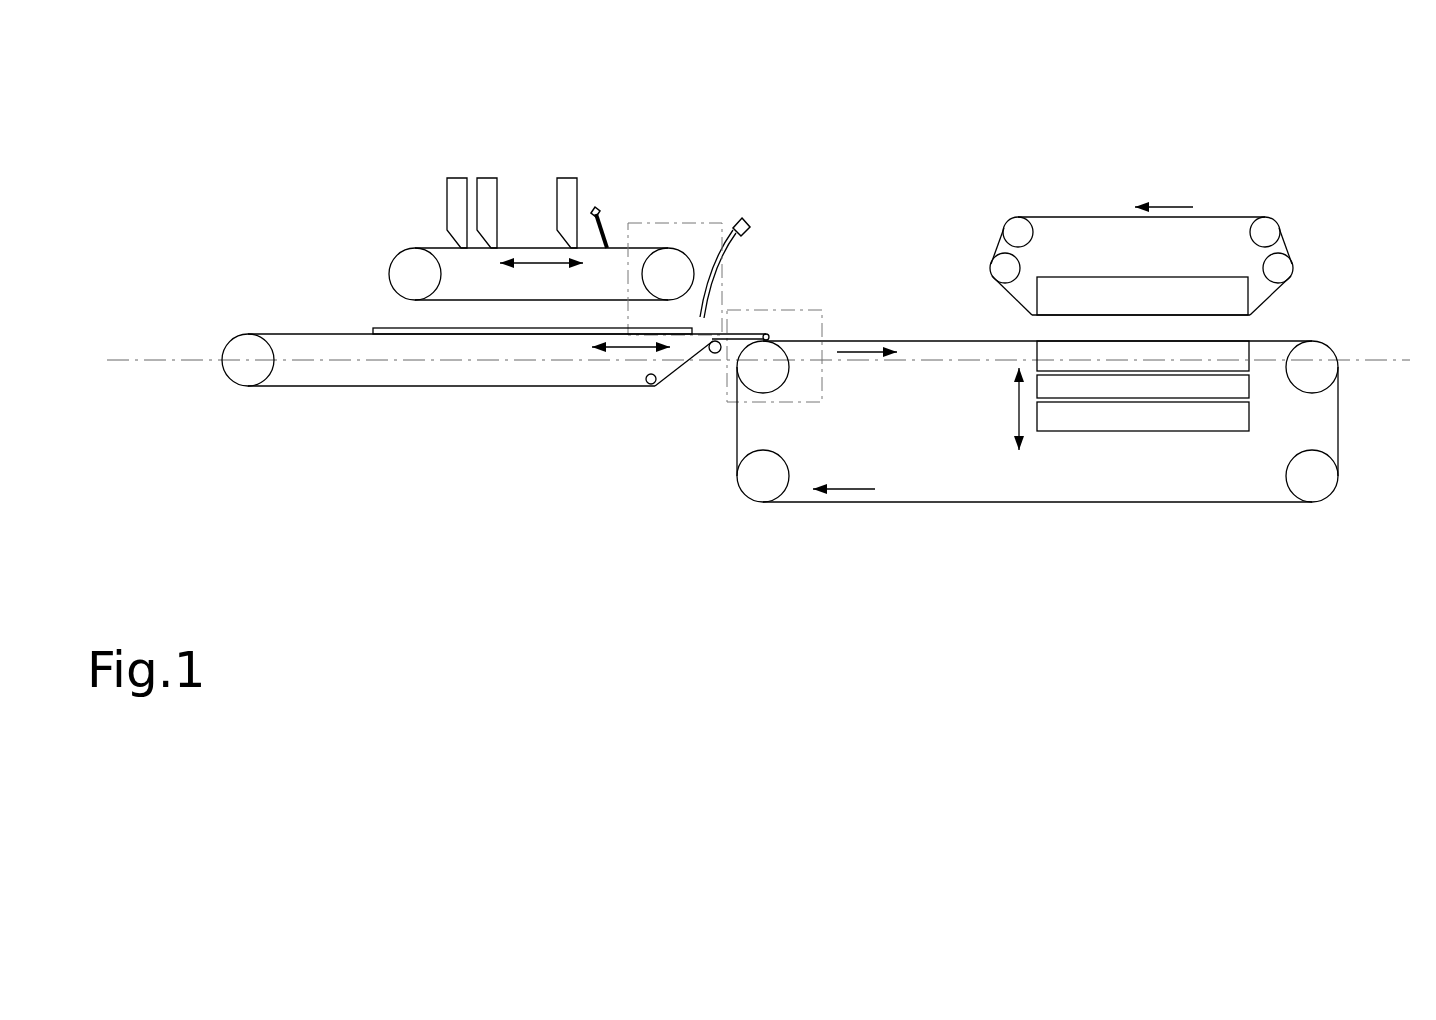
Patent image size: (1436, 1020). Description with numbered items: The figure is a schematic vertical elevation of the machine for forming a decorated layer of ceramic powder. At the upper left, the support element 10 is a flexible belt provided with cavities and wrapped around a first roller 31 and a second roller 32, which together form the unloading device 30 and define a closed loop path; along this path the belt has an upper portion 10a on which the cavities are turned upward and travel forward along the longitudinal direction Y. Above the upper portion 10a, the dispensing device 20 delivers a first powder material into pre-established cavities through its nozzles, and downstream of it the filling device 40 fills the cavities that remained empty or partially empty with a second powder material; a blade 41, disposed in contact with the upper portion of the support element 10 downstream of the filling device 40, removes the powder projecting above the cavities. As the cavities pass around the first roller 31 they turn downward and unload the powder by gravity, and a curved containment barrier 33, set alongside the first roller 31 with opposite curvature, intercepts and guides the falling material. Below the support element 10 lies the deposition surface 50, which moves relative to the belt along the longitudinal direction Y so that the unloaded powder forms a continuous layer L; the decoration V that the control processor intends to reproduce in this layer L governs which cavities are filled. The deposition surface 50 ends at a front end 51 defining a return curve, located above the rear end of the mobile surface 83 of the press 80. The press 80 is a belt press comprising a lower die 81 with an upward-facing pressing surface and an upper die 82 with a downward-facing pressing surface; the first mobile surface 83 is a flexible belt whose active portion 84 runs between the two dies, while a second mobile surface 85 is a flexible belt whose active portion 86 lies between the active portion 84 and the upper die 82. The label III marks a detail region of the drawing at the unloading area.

The support element 10 is at (518, 170).
The upper portion 10a is at (531, 248).
The dispensing device 20 is at (457, 185).
The unloading device 30 is at (745, 196).
The first roller 31 is at (668, 265).
The second roller 32 is at (403, 267).
The containment barrier 33 is at (713, 263).
The filling device 40 is at (567, 185).
The blade 41 is at (600, 237).
The deposition surface 50 is at (548, 358).
The front end 51 is at (768, 331).
The press 80 is at (1191, 192).
The lower die 81 is at (1206, 348).
The upper die 82 is at (1098, 292).
The mobile surface 83 is at (1037, 359).
The active portion 84 is at (925, 340).
The second mobile surface 85 is at (1050, 217).
The active portion 86 is at (1263, 308).
The layer L is at (489, 331).
The longitudinal direction Y is at (755, 347).
The detail view III indicator III is at (645, 223).
The decoration V is at (753, 312).